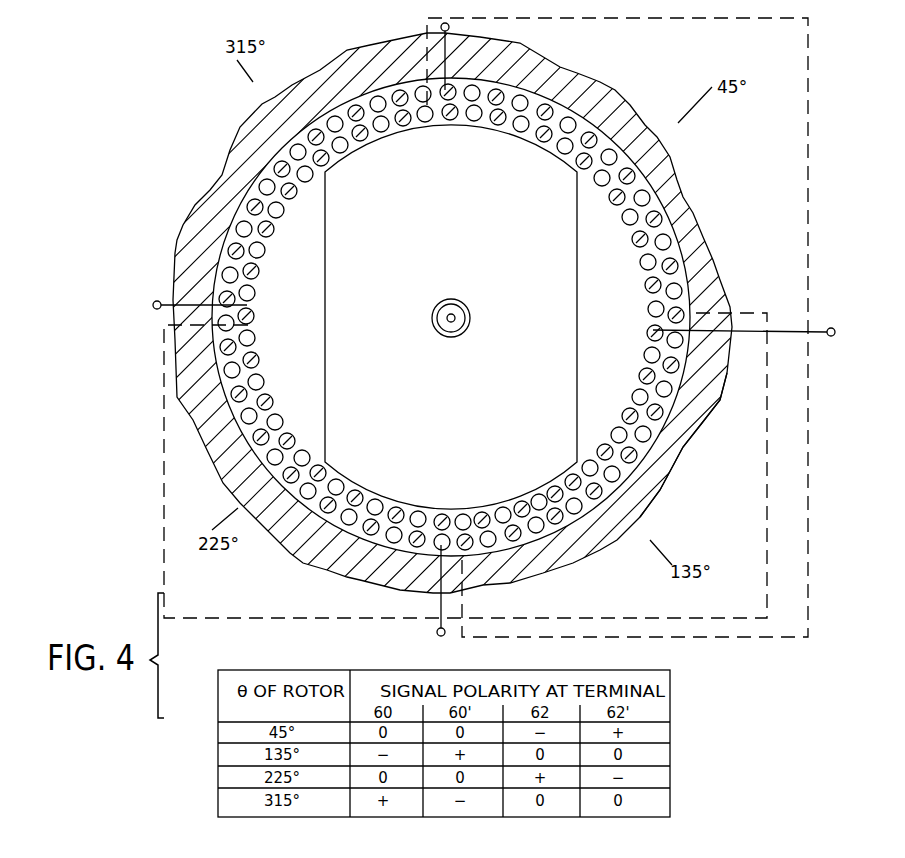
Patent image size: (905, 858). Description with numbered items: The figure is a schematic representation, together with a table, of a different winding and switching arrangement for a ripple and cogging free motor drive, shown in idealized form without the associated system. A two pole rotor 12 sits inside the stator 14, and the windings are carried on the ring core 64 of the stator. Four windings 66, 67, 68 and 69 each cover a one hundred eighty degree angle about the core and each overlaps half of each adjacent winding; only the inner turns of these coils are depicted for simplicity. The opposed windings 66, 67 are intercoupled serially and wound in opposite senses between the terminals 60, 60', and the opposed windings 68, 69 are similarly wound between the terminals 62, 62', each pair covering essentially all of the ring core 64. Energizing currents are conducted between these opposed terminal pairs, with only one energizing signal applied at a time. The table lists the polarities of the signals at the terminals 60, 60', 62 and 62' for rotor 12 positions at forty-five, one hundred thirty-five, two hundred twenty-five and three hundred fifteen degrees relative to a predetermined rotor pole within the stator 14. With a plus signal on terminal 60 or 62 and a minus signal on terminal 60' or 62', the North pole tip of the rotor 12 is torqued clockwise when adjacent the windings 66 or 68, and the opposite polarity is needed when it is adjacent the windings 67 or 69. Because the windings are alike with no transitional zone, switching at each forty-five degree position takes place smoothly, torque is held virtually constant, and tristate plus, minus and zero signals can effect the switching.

The rotor 12 is at (562, 326).
The stator 14 is at (673, 182).
The terminal 60 is at (192, 318).
The terminal 60' is at (752, 321).
The terminal 62 is at (465, 487).
The terminal 62' is at (617, 327).
The ring core 64 is at (683, 444).
The winding 66 is at (228, 235).
The winding 67 is at (240, 410).
The winding 68 is at (317, 543).
The winding 69 is at (592, 113).